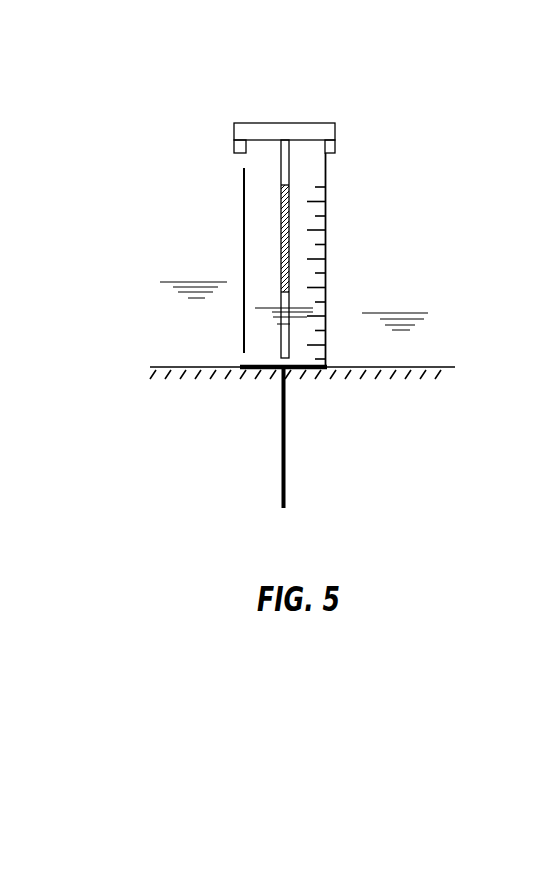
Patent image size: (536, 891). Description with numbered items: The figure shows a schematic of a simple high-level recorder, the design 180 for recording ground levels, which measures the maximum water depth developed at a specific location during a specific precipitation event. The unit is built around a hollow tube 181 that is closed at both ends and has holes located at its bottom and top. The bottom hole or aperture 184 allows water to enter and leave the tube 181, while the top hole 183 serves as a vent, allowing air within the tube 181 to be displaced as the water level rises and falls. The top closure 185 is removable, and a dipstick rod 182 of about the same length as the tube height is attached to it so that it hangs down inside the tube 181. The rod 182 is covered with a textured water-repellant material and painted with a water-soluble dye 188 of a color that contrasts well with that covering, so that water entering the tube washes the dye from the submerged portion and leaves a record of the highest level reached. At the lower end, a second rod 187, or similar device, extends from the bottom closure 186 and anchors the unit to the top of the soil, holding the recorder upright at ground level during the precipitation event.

The design for recording ground levels 180 is at (139, 59).
The hollow tube 181 is at (327, 204).
The dipstick rod 182 is at (292, 172).
The top hole 183 is at (238, 163).
The bottom hole 184 is at (238, 360).
The top closure 185 is at (305, 123).
The bottom closure 186 is at (267, 372).
The second rod 187 is at (288, 453).
The water-soluble dye 188 is at (290, 252).